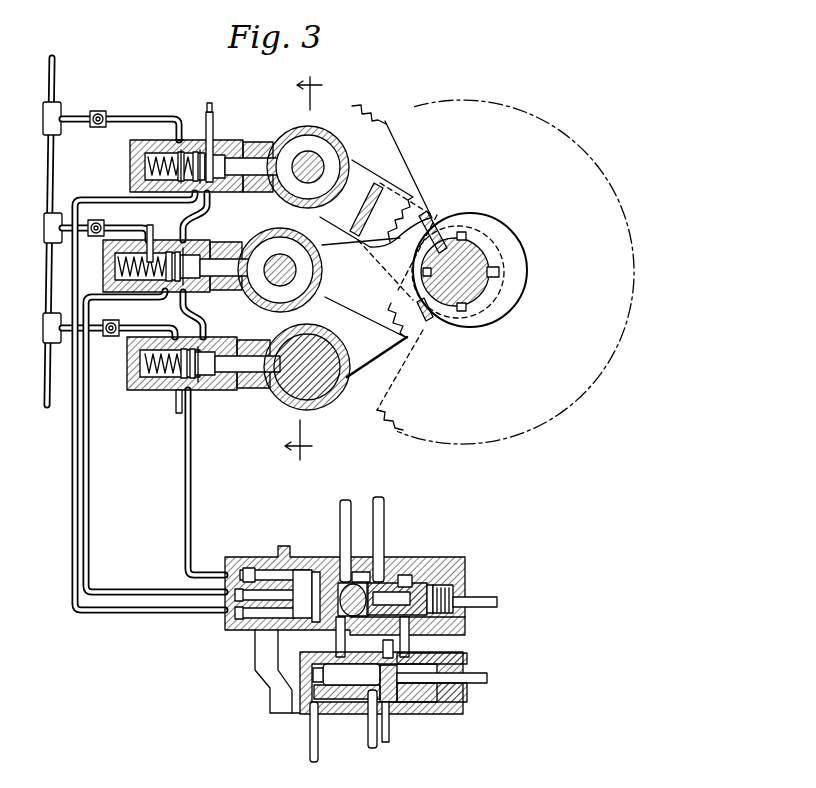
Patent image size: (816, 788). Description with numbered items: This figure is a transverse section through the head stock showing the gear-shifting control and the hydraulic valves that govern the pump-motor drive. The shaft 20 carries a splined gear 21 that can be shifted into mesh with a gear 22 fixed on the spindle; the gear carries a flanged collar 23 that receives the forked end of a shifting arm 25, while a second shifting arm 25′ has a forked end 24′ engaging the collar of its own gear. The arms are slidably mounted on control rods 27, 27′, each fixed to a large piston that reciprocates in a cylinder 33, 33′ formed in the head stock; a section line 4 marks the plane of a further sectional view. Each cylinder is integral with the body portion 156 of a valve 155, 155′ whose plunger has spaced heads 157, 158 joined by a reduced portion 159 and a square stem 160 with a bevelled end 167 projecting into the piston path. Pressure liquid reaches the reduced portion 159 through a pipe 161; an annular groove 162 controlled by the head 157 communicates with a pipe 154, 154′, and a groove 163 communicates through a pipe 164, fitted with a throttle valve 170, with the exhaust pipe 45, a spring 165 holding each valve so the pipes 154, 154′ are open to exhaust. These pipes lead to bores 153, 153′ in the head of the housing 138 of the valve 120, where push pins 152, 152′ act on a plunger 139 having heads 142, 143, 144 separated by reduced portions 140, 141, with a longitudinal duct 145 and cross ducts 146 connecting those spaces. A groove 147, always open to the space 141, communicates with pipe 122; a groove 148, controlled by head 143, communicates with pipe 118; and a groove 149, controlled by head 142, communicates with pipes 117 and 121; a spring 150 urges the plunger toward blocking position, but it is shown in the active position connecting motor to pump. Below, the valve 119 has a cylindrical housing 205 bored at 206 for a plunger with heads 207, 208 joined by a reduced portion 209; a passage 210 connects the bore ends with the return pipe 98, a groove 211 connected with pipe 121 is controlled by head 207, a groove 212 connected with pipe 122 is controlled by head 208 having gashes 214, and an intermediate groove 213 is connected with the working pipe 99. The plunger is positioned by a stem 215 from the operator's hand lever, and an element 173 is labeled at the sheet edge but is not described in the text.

The exhaust pipe 45 is at (54, 60).
The throttle valve 170 is at (120, 100).
The pipe 154 is at (92, 186).
The pipe 154′ is at (90, 440).
The spring 165 is at (140, 165).
The valve 155 is at (244, 125).
The valve 155′ is at (205, 240).
The square stem 160 is at (272, 132).
The body portion 156 is at (160, 378).
The plunger head 158 is at (210, 195).
The reduced portion 159 is at (190, 295).
The pressure pipe 161 is at (214, 108).
The exhaust pipe 164 is at (200, 102).
The annular groove 162 is at (190, 150).
The groove 163 is at (164, 132).
The plunger head 157 is at (153, 228).
The cylinder 33 is at (292, 126).
The cylinder 33′ is at (254, 232).
The bevelled end 167 is at (316, 152).
The control rod 27 is at (318, 165).
The control rod 27′ is at (293, 272).
The section line 4 is at (303, 270).
The gear 21 is at (385, 118).
The shifting arm 25 is at (413, 197).
The gear 22 is at (420, 192).
The shifting arm 25′ is at (384, 302).
The flanged collar 23 is at (505, 318).
The shaft 20 is at (496, 270).
The forked end 24′ is at (430, 315).
The valve housing 138 is at (460, 562).
The push pin 152′ is at (240, 594).
The push pin 152 is at (262, 618).
The bore 153′ is at (236, 592).
The bore 153 is at (240, 614).
The plunger head 142 is at (303, 594).
The valve plunger 139 is at (301, 602).
The cross ducts 146 is at (340, 598).
The reduced portion 141 is at (395, 620).
The plunger head 143 is at (405, 575).
The longitudinal duct 145 is at (416, 581).
The annular groove 147 is at (450, 582).
The groove 148 is at (440, 582).
The control valve 120 is at (430, 582).
The spring 150 is at (480, 592).
The plunger head 144 is at (466, 625).
The motor pipe 117 is at (338, 522).
The motor pipe 118 is at (384, 535).
The groove 149 is at (362, 526).
The reduced portion 140 is at (361, 562).
The connecting pipe 121 is at (334, 645).
The connecting pipe 122 is at (398, 645).
The valve housing 205 is at (440, 713).
The piston head 207 is at (282, 672).
The control valve 119 is at (300, 690).
The reduced portion 209 is at (357, 702).
The pump pipe 99 is at (340, 690).
The groove 212 is at (450, 660).
The stem 215 is at (488, 677).
The bore 206 is at (455, 695).
The passage 210 is at (455, 706).
The piston head 208 is at (395, 700).
The pump pipe 98 is at (310, 735).
The groove 211 is at (323, 700).
The intermediate groove 213 is at (372, 750).
The gashes 214 is at (386, 742).
The conduit 173 is at (676, 771).